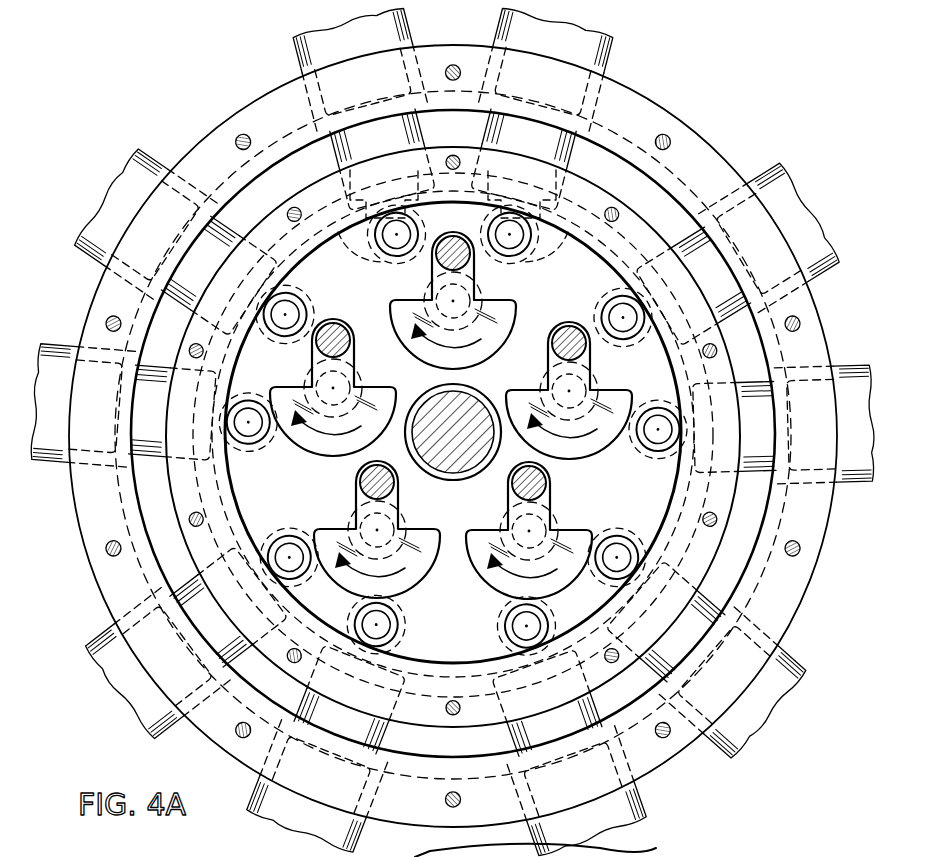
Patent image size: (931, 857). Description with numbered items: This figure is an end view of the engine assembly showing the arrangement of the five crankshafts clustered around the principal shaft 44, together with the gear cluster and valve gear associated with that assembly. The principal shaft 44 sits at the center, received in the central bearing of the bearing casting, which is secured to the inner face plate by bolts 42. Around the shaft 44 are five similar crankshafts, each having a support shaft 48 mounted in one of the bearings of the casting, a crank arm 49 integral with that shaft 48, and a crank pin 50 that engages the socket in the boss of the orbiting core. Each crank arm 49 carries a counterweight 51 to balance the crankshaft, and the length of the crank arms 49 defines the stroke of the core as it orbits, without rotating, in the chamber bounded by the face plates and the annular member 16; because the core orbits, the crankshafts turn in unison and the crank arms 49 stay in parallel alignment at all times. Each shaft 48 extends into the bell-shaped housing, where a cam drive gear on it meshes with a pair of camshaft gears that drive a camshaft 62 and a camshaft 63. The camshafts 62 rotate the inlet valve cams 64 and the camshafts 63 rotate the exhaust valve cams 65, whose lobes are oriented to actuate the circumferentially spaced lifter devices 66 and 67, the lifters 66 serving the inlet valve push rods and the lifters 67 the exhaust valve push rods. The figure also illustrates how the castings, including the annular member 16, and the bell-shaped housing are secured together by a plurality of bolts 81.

The annular member 16 is at (552, 847).
The bolts 42 is at (666, 210).
The principal shaft 44 is at (440, 410).
The support shaft 48 is at (303, 385).
The crank arm 49 is at (485, 303).
The crank pin 50 is at (436, 263).
The counterweight 51 is at (392, 322).
The camshaft 62 is at (350, 220).
The camshaft 63 is at (515, 198).
The inlet valve cam 64 is at (372, 258).
The exhaust valve cam 65 is at (540, 258).
The lifter device 66 is at (383, 158).
The lifter device 67 is at (562, 193).
The bolts 81 is at (674, 136).